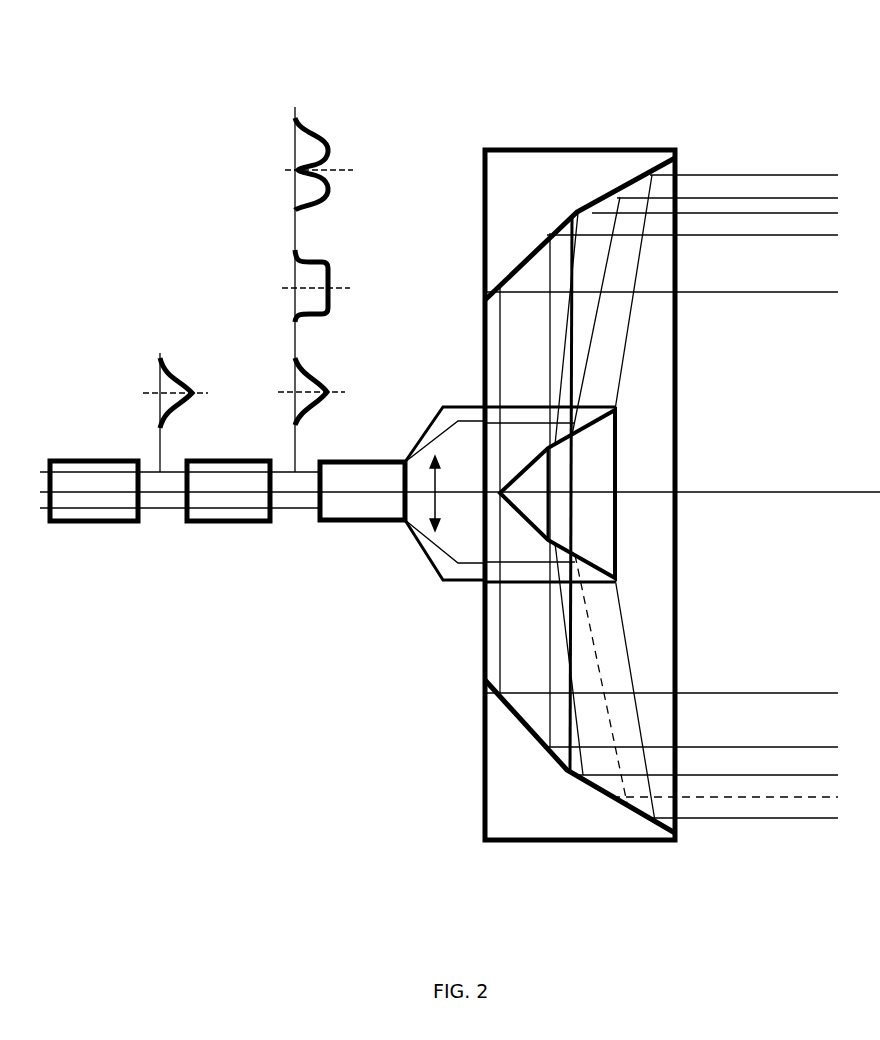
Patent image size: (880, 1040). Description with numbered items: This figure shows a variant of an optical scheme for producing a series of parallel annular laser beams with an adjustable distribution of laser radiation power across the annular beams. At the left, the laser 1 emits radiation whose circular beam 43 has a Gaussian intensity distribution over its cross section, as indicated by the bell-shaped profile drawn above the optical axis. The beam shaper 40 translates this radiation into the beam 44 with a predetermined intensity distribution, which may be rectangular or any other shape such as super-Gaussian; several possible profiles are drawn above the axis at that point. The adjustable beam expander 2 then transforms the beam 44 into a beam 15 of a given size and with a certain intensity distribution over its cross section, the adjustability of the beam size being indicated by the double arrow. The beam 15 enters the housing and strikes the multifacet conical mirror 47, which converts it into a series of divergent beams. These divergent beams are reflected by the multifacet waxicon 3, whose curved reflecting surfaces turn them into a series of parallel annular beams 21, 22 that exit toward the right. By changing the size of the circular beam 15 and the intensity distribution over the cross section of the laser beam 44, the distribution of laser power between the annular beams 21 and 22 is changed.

The laser 1 is at (88, 505).
The beam shaper 40 is at (220, 505).
The adjustable beam expander 2 is at (343, 505).
The circular beam 43 is at (158, 355).
The beam with predetermined intensity distribution 44 is at (293, 202).
The beam 15 is at (471, 407).
The multifacet waxicon 3 is at (523, 815).
The multifacet conical mirror 47 is at (593, 477).
The parallel annular beam 21 is at (713, 208).
The parallel annular beam 22 is at (800, 253).